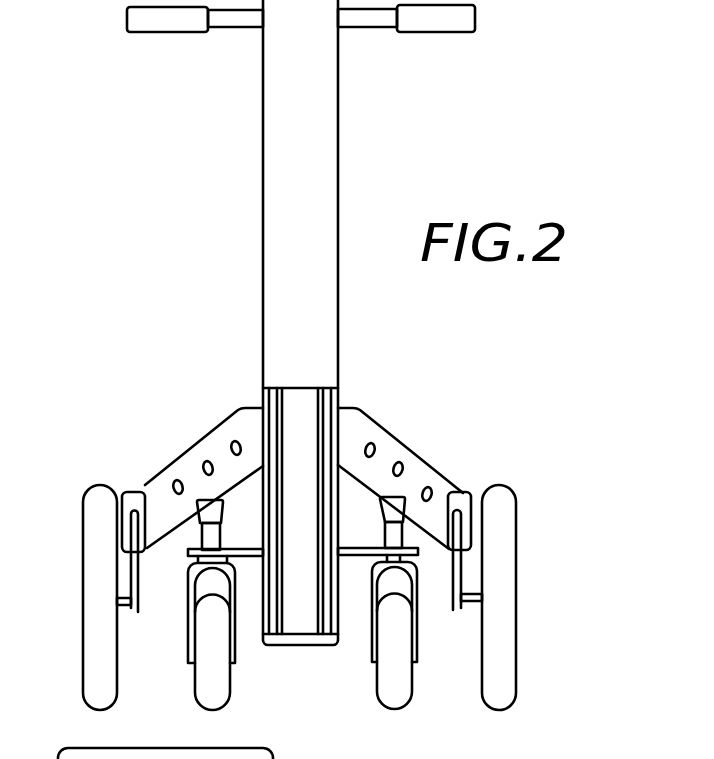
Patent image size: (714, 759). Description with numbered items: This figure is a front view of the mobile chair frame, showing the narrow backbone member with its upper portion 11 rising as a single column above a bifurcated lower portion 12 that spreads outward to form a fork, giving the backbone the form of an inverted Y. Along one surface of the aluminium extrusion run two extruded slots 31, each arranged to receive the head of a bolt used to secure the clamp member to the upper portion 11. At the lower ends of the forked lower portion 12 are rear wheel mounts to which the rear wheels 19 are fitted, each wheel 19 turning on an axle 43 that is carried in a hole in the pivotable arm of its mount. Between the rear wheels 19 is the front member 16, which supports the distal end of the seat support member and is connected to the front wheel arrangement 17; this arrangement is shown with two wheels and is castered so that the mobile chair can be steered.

The upper portion 11 is at (338, 196).
The extruded slots 31 is at (320, 407).
The front member 16 is at (297, 625).
The bifurcated lower portion 12 is at (390, 440).
The axle 43 is at (125, 608).
The rear wheels 19 is at (95, 633).
The front wheel arrangement 17 is at (398, 693).